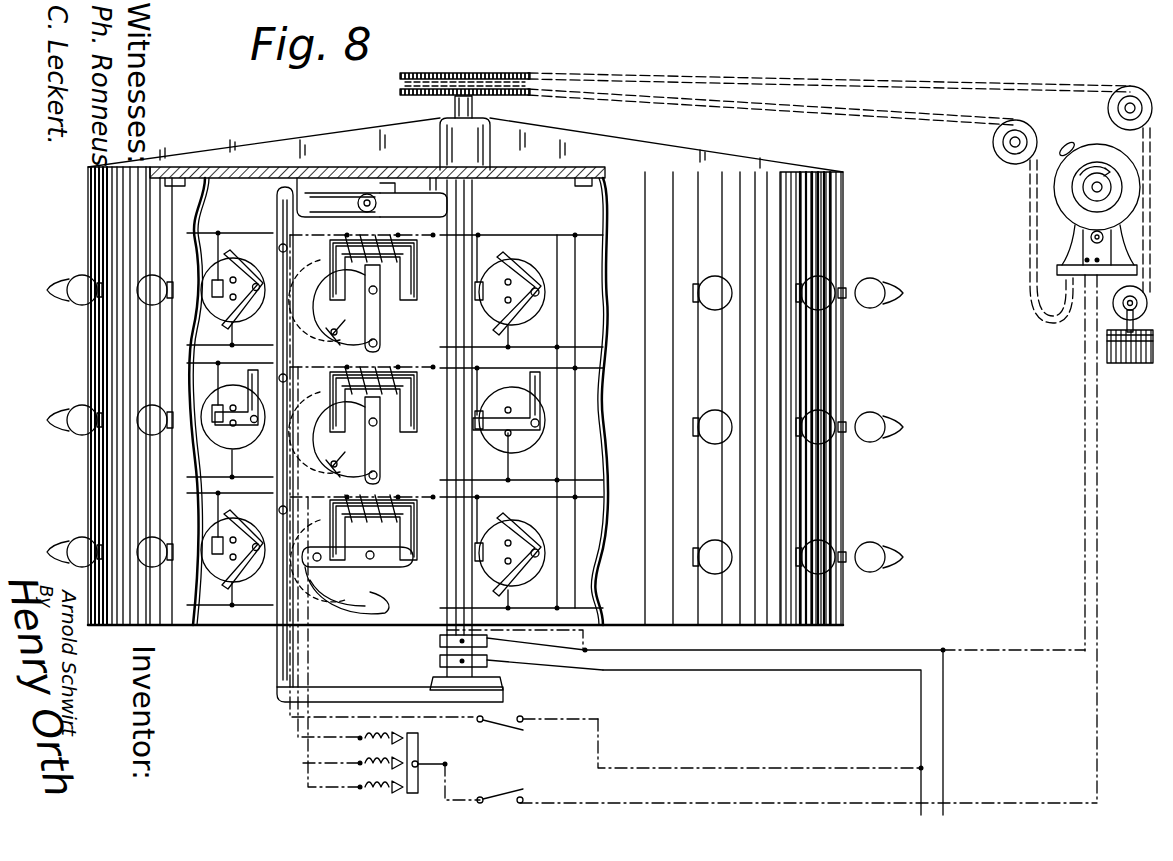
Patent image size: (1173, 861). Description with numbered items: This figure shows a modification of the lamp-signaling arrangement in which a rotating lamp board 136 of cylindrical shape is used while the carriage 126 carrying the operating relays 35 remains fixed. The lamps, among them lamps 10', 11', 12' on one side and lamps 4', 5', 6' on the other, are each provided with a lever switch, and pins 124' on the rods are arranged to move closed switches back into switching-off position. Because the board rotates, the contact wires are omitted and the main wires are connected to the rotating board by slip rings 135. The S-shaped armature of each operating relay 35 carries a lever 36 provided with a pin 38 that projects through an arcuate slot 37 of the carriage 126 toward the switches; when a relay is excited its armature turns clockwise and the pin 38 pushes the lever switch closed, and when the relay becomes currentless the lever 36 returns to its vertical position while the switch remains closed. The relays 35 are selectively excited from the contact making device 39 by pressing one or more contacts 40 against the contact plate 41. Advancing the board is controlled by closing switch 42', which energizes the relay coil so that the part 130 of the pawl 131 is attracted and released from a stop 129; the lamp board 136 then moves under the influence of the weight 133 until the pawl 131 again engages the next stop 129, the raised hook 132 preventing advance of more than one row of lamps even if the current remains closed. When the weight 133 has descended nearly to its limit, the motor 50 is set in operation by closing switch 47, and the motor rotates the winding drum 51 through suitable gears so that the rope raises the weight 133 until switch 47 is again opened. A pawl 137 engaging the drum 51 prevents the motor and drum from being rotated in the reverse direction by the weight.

The lamp board 136 is at (90, 235).
The stops 129 is at (283, 172).
The projection 130 is at (298, 202).
The pawl 131 is at (362, 196).
The raised hook 132 is at (413, 193).
The carriage 126 is at (280, 210).
The lamp 10' is at (221, 282).
The lamp 11' is at (227, 405).
The lamp 12' is at (227, 542).
The pin 124' is at (260, 377).
The operating relays 35 is at (405, 268).
The lever 36 is at (381, 322).
The pin 38 is at (376, 345).
The arcuate slot 37 is at (366, 614).
The slip rings 135 is at (440, 660).
The lamp 4' is at (512, 286).
The lamp 5' is at (511, 423).
The lamp 6' is at (512, 559).
The winding drum 51 is at (1092, 162).
The pawl 137 is at (1063, 146).
The motor 50 is at (1085, 243).
The weight 133 is at (1127, 353).
The contacts 40 is at (360, 783).
The contact making device 39 is at (436, 763).
The contact plate 41 is at (420, 782).
The switch 47 is at (514, 797).
The switch 42' is at (537, 711).